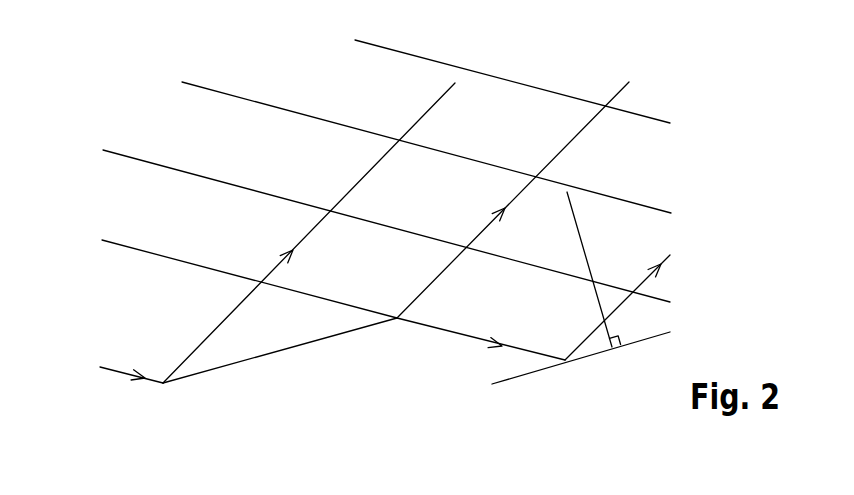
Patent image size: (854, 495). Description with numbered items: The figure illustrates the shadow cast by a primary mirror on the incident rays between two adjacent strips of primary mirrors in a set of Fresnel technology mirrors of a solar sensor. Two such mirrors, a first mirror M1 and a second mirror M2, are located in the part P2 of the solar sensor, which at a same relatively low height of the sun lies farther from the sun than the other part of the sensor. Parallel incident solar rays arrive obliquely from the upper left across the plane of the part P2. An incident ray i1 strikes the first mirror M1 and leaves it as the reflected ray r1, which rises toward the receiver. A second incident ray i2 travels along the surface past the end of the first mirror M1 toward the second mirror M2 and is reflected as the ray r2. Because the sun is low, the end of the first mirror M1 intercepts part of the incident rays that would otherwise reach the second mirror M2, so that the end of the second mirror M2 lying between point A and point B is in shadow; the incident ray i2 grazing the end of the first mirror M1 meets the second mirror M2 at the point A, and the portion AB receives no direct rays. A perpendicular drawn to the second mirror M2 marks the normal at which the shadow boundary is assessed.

The part of the solar sensor P2 is at (386, 211).
The incident ray i1 is at (122, 372).
The reflected ray r1 is at (233, 310).
The first mirror M1 is at (283, 352).
The incident ray i2 is at (316, 297).
The reflected ray r2 is at (432, 283).
The second mirror M2 is at (587, 357).
The point A is at (565, 376).
The point B is at (479, 385).